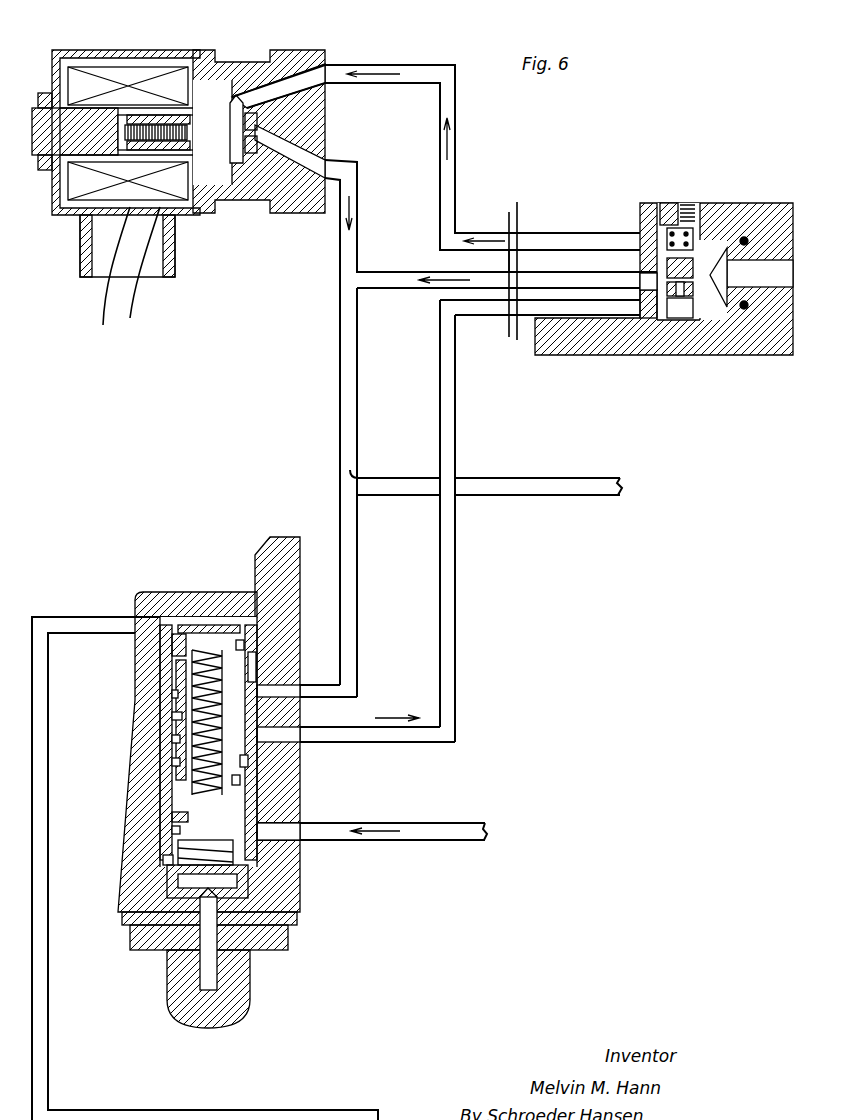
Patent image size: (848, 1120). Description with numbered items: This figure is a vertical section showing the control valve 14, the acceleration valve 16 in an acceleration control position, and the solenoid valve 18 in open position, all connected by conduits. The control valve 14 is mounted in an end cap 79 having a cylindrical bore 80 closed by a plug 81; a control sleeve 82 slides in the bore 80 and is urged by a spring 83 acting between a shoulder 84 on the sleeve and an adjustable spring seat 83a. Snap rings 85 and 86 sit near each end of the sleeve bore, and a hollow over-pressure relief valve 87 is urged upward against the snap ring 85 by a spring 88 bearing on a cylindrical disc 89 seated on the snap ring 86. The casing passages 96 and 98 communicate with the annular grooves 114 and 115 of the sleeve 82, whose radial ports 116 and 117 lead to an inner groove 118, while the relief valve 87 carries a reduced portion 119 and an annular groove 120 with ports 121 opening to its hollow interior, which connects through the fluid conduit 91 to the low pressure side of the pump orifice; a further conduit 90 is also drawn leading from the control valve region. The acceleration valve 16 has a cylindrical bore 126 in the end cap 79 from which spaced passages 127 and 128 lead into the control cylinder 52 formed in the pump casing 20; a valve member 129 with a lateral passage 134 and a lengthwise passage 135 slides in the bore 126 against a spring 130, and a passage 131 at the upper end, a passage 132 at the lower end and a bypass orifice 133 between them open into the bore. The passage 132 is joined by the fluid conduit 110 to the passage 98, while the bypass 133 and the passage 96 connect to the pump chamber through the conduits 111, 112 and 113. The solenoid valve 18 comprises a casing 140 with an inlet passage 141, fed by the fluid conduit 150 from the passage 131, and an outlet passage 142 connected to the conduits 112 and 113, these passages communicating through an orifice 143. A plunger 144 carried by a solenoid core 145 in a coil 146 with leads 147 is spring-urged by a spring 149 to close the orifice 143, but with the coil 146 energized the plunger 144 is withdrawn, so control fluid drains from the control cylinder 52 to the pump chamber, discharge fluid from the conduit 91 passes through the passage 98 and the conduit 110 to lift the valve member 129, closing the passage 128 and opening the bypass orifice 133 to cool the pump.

The solenoid valve 18 is at (75, 38).
The solenoid core 145 is at (142, 125).
The spring 149 is at (162, 135).
The inlet passage 141 is at (292, 75).
The fluid conduit 150 is at (455, 97).
The coil 146 is at (95, 200).
The leads 147 is at (108, 318).
The plunger 144 is at (230, 150).
The orifice 143 is at (250, 158).
The outlet passage 142 is at (280, 180).
The casing 140 is at (318, 215).
The acceleration valve 16 is at (640, 217).
The passage 131 is at (666, 205).
The spring 130 is at (688, 220).
The passage 127 is at (722, 250).
The valve member 129 is at (665, 240).
The conduit 111 is at (543, 261).
The lateral passage 134 is at (667, 266).
The bypass orifice 133 is at (648, 282).
The fluid conduit 110 is at (456, 618).
The passage 132 is at (652, 318).
The cylindrical bore 126 is at (687, 298).
The casing 20 is at (742, 350).
The passage 135 is at (672, 318).
The passage 128 is at (712, 305).
The control cylinder 52 is at (760, 312).
The conduit 112 is at (340, 382).
The conduit 113 is at (568, 478).
The control valve 14 is at (164, 578).
The end cap 79 is at (222, 600).
The snap ring 85 is at (196, 630).
The cylindrical bore 80 is at (245, 640).
The port 116 is at (262, 665).
The annular groove 114 is at (268, 688).
The over-pressure relief valve 87 is at (185, 645).
The control sleeve 82 is at (190, 656).
The spring 88 is at (190, 672).
The reduced portion 119 is at (180, 692).
The annular groove 118 is at (178, 714).
The annular groove 120 is at (178, 738).
The ports 121 is at (176, 760).
The passage 96 is at (290, 690).
The passage 98 is at (288, 748).
The annular groove 115 is at (266, 760).
The port 117 is at (276, 778).
The shoulder 84 is at (175, 818).
The cylindrical disc 89 is at (176, 830).
The spring 83 is at (176, 848).
The snap ring 86 is at (166, 864).
The spring seat 83a is at (250, 893).
The fluid conduit 91 is at (392, 840).
The plug 81 is at (262, 948).
The conduit 90 is at (303, 1110).